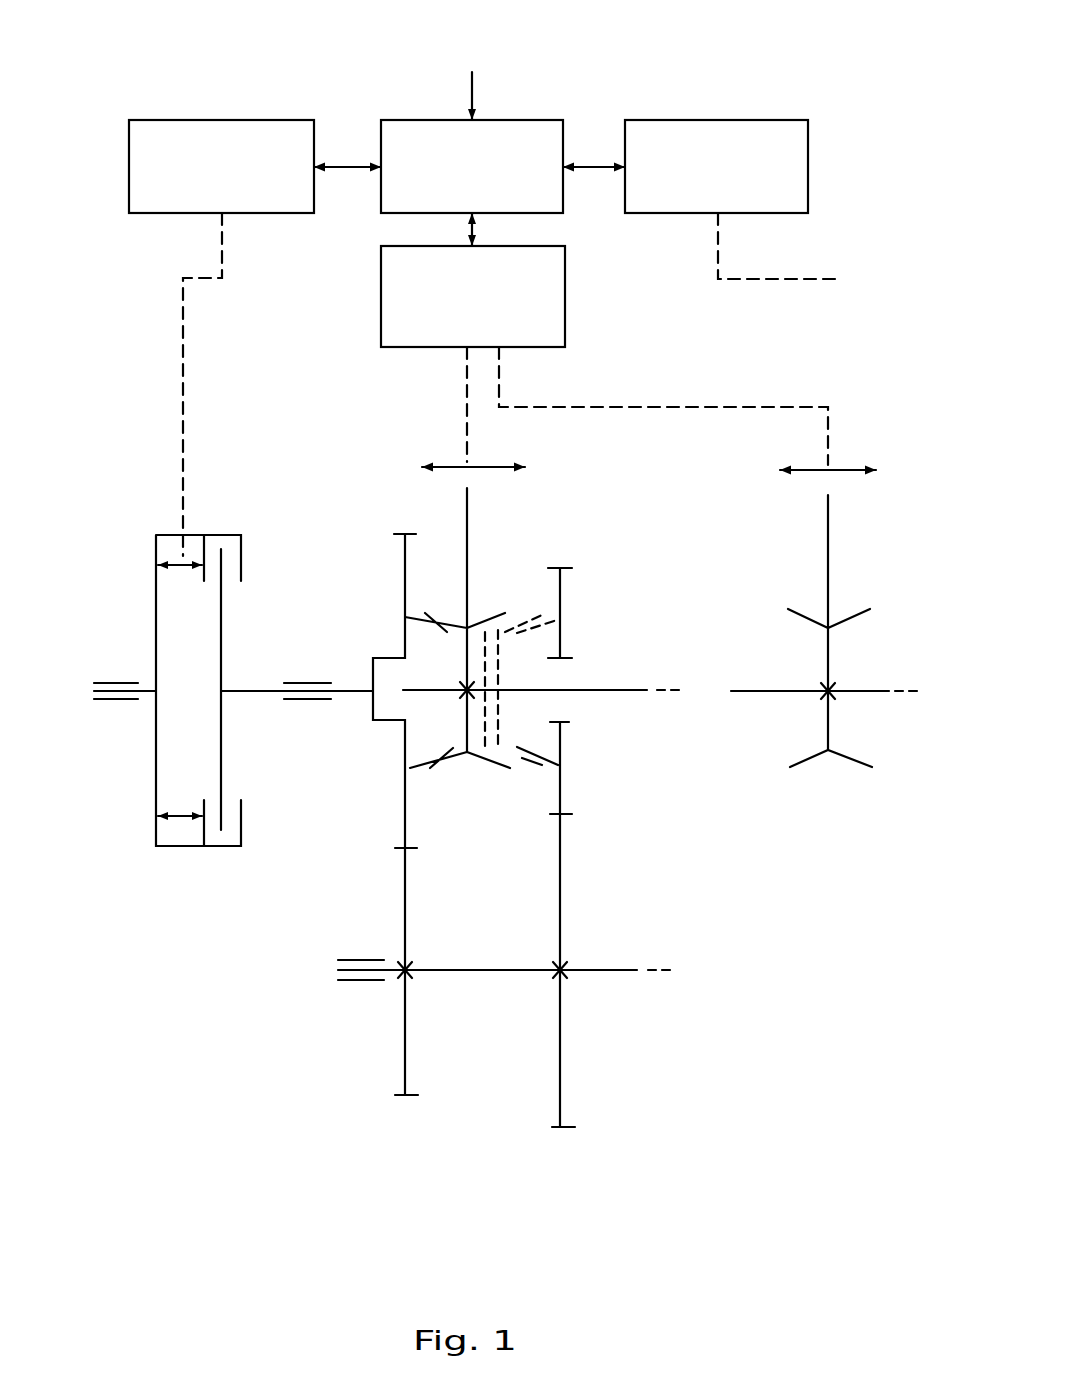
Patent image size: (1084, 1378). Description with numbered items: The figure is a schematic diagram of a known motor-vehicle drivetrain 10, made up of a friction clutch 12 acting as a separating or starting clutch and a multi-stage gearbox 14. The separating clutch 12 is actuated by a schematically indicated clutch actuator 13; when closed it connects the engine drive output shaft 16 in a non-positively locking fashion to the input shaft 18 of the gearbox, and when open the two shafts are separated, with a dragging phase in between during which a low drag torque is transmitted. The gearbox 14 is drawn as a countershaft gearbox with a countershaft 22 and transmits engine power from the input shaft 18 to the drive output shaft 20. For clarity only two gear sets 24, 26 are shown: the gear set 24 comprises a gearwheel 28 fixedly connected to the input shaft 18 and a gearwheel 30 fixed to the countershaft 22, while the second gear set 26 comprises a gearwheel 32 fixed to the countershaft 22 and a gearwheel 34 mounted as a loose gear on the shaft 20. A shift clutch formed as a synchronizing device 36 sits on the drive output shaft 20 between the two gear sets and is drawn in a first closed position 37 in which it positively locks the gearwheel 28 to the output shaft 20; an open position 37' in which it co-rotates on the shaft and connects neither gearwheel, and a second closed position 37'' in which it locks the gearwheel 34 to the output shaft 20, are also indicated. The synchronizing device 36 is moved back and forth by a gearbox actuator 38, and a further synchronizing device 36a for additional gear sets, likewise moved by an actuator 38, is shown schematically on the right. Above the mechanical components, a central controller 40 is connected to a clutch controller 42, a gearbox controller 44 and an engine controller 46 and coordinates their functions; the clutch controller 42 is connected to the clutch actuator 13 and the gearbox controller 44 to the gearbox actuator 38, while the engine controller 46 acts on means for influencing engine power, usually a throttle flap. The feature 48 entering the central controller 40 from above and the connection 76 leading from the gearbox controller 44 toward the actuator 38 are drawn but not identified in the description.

The drivetrain 10 is at (232, 967).
The friction clutch 12 is at (157, 848).
The clutch actuator 13 is at (178, 556).
The multi-stage gearbox 14 is at (624, 1036).
The engine drive output shaft 16 is at (123, 688).
The input shaft 18 is at (254, 690).
The drive output shaft 20 is at (627, 690).
The countershaft 22 is at (617, 970).
The gear set 24 is at (410, 1115).
The second gear set 26 is at (563, 1146).
The gearwheel 28 is at (404, 798).
The gearwheel 30 is at (405, 1035).
The gearwheel 32 is at (563, 903).
The gearwheel 34 is at (561, 781).
The synchronizing device 36 is at (482, 788).
The further synchronizing device 36a is at (832, 776).
The first closed position 37 is at (484, 620).
The open position 37' is at (583, 637).
The second closed position 37'' is at (589, 657).
The actuator 38 is at (485, 470).
The central controller 40 is at (490, 191).
The clutch controller 42 is at (240, 191).
The gearbox controller 44 is at (460, 321).
The engine controller 46 is at (734, 191).
The input signal 48 is at (474, 97).
The control line 76 is at (467, 405).